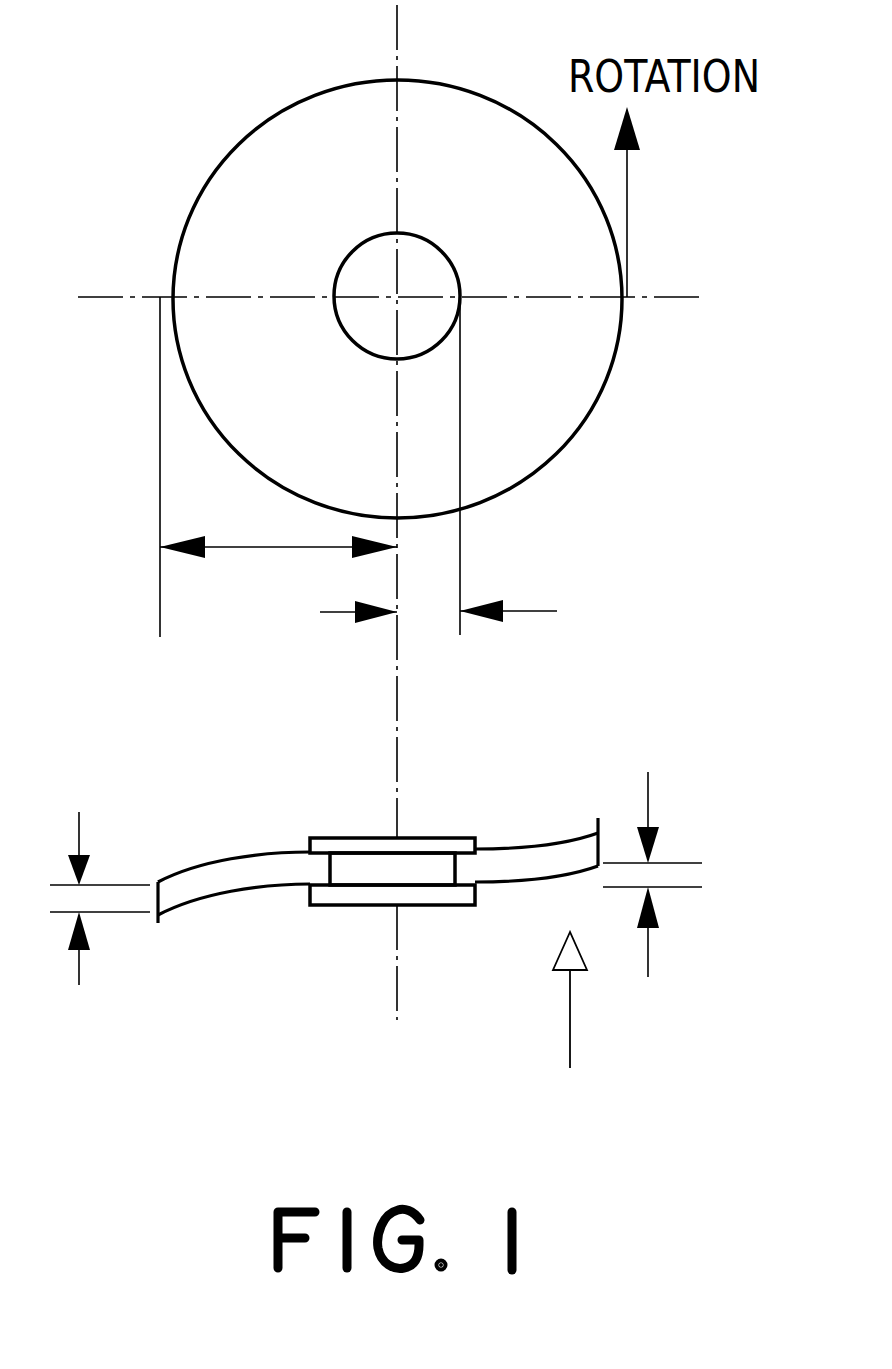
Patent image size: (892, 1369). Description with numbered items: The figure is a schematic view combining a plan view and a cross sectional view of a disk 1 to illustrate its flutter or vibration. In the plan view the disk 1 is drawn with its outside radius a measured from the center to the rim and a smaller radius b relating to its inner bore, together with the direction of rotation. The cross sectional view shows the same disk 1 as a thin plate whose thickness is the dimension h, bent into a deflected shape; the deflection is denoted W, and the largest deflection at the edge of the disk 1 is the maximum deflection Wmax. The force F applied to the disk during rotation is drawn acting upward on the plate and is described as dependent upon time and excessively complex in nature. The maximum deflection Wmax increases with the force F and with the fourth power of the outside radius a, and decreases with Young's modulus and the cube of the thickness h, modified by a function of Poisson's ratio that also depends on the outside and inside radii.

The rotary blade (thin disc) 1 is at (263, 850).
The outside radius of the disk a is at (278, 562).
The radius of hub bore b is at (438, 617).
The thickness of the disk h is at (83, 898).
The maximum deflection Wmax is at (663, 852).
The force applied to the disk F is at (568, 1026).
The warp of blade W is at (166, 1046).